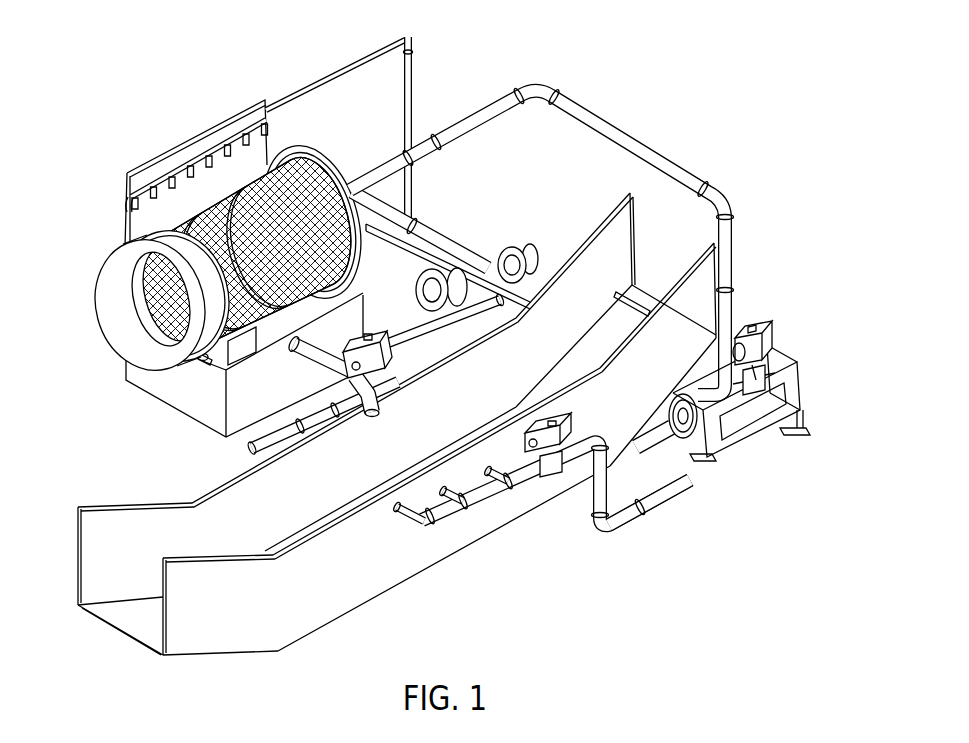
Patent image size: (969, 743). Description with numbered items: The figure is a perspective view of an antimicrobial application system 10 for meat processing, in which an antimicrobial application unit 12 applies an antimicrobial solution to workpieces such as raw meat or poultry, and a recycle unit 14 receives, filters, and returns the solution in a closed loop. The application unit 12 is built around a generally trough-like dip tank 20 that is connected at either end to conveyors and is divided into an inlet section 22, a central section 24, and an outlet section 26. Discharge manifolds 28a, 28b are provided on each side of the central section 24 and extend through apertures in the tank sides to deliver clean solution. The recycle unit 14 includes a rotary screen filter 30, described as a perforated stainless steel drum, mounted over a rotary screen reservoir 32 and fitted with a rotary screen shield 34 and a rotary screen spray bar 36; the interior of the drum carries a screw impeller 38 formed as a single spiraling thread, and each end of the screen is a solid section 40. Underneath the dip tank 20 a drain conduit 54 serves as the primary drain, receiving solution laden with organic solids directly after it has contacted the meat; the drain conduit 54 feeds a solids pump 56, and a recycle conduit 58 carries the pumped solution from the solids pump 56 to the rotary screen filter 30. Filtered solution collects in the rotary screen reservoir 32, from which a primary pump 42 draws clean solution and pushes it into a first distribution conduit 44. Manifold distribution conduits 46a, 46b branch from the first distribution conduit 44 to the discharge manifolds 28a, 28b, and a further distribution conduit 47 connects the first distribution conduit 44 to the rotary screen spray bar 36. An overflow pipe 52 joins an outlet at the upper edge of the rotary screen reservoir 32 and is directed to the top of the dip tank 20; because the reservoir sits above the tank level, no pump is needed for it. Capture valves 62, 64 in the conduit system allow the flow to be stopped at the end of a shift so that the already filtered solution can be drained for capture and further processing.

The antimicrobial application system 10 is at (434, 342).
The antimicrobial application unit 12 is at (397, 427).
The recycle unit 14 is at (298, 135).
The dip tank 20 is at (478, 525).
The inlet section 22 is at (126, 608).
The central section 24 is at (541, 480).
The outlet section 26 is at (622, 316).
The discharge manifold 28a is at (480, 500).
The discharge manifold 28b is at (368, 392).
The rotary screen filter 30 is at (216, 253).
The rotary screen reservoir 32 is at (140, 378).
The rotary screen shield 34 is at (233, 116).
The rotary screen spray bar 36 is at (206, 150).
The screw impeller 38 is at (136, 283).
The solid section 40 is at (316, 178).
The primary pump 42 is at (503, 253).
The first distribution conduit 44 is at (410, 244).
The manifold distribution conduit 46a is at (640, 508).
The manifold distribution conduit 46b is at (310, 418).
The further distribution conduit 47 is at (412, 73).
The overflow pipe 52 is at (310, 353).
The drain conduit 54 is at (657, 432).
The solids pump 56 is at (786, 403).
The recycle conduit 58 is at (696, 176).
The capture valve 62 is at (565, 418).
The capture valve 64 is at (370, 333).